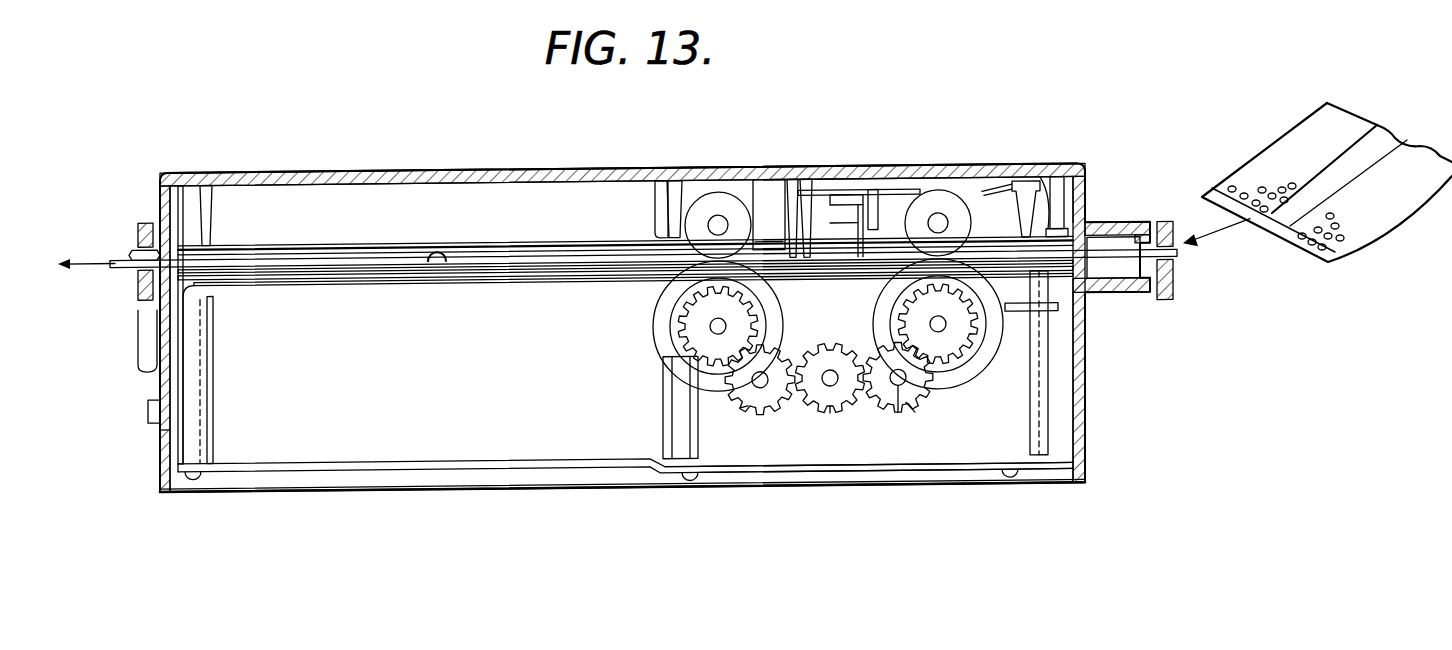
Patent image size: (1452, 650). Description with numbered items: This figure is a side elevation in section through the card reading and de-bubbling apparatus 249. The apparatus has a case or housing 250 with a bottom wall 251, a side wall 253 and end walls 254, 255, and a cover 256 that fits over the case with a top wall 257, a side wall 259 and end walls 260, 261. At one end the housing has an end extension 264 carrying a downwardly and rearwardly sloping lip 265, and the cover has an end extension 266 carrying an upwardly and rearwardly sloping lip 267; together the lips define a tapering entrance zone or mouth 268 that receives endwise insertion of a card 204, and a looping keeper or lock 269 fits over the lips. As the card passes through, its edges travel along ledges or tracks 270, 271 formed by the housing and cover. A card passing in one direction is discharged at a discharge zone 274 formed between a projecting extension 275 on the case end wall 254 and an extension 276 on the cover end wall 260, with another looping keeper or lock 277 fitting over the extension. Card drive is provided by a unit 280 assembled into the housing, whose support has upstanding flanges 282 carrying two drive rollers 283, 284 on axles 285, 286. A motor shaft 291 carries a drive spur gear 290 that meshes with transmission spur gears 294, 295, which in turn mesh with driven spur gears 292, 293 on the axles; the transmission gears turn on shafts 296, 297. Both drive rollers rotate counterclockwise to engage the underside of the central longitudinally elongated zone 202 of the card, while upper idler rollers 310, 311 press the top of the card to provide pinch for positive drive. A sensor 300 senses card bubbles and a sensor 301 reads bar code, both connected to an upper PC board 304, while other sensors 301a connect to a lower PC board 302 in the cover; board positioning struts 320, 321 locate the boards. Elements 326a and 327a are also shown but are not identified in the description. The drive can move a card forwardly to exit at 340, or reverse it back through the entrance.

The central longitudinally elongated zone 202 is at (1382, 134).
The card 204 is at (1282, 120).
The apparatus 249 is at (338, 146).
The case or housing 250 is at (300, 512).
The bottom wall 251 is at (452, 474).
The side wall 253 is at (390, 417).
The case end wall 254 is at (158, 444).
The end wall 255 is at (1088, 432).
The cover 256 is at (468, 165).
The top wall 257 is at (528, 170).
The side wall 259 is at (383, 217).
The cover end wall 260 is at (158, 205).
The end wall 261 is at (1088, 178).
The end extension 264 is at (1090, 315).
The lip 265 is at (1182, 270).
The end extension 266 is at (1150, 220).
The lip 267 is at (1145, 225).
The tapering entrance zone or mouth 268 is at (1140, 290).
The looping keeper or lock 269 is at (1185, 298).
The ledge or track 270 is at (400, 270).
The ledge or track 271 is at (436, 266).
The discharge zone 274 is at (140, 266).
The projecting extension 275 is at (150, 275).
The extension 276 is at (140, 222).
The looping keeper or lock 277 is at (112, 403).
The drive unit 280 is at (813, 480).
The upstanding flanges 282 is at (747, 465).
The drive roller 283 is at (1000, 347).
The drive roller 284 is at (653, 307).
The axle 285 is at (962, 408).
The axle 286 is at (690, 336).
The drive spur gear 290 is at (835, 410).
The motor shaft 291 is at (826, 384).
The driven spur gear 292 is at (708, 324).
The driven spur gear 293 is at (940, 336).
The transmission spur gear 294 is at (747, 412).
The transmission spur gear 295 is at (925, 420).
The shaft 296 is at (752, 386).
The shaft 297 is at (902, 408).
The sensor 300 is at (880, 214).
The sensor 301 is at (1042, 186).
The sensors 301a is at (1116, 363).
The lower PC board 302 is at (258, 289).
The upper PC board 304 is at (256, 244).
The upper idler roller 310 is at (940, 200).
The upper idler roller 311 is at (716, 200).
The board positioning strut 320 is at (200, 410).
The board positioning strut 321 is at (206, 192).
The wedge 326a is at (798, 264).
The block 327a is at (772, 250).
The exit 340 is at (98, 258).